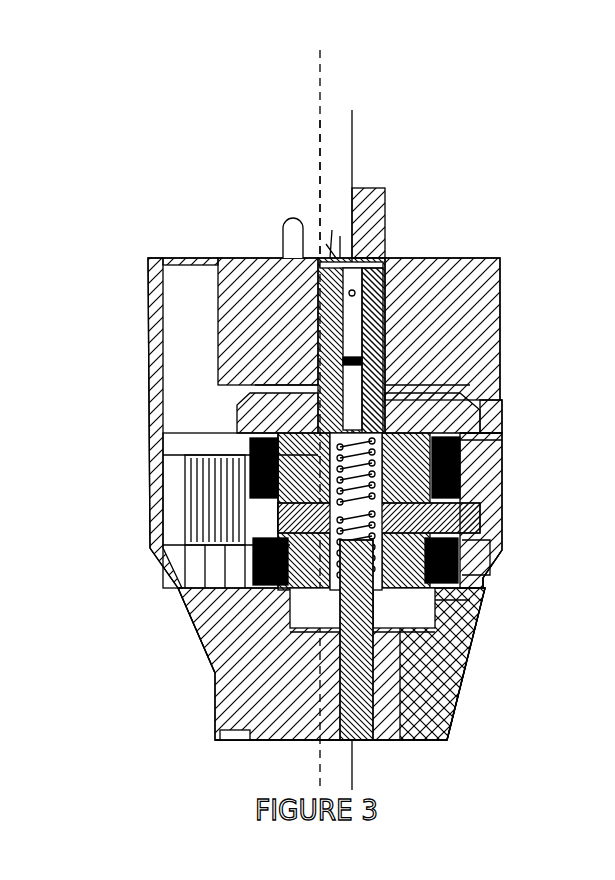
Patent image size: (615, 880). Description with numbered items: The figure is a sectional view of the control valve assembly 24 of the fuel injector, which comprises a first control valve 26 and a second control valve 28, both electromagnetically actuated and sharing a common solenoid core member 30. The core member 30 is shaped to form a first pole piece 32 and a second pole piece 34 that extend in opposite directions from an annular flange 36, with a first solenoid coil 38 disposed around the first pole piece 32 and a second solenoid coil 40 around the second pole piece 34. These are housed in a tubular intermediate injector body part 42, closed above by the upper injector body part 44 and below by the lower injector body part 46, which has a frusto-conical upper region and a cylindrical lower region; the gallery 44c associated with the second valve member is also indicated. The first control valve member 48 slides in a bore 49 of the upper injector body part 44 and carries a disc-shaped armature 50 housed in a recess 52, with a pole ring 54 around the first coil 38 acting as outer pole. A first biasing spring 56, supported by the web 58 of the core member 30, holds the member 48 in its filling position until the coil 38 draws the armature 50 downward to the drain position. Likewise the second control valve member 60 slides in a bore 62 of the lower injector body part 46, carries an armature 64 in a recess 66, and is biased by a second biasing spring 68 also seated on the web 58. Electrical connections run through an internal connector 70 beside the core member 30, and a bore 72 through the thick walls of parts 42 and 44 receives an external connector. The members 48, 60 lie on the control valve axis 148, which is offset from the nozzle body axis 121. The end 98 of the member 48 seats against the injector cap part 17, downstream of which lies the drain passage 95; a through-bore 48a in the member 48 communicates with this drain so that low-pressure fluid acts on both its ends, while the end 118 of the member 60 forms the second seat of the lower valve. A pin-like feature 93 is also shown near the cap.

The injector cap part 17 is at (377, 190).
The control valve assembly 24 is at (90, 272).
The first control valve 26 is at (508, 328).
The second control valve 28 is at (458, 662).
The solenoid core member 30 is at (470, 518).
The first pole piece 32 is at (487, 385).
The second pole piece 34 is at (415, 610).
The flange 36 is at (480, 498).
The first solenoid coil 38 is at (500, 448).
The second solenoid coil 40 is at (490, 566).
The intermediate injector body part 42 is at (498, 548).
The upper injector body part 44 is at (503, 288).
The housing corner 44c is at (442, 745).
The lower injector body part 46 is at (222, 673).
The first control valve member 48 is at (387, 260).
The through-bore 48a is at (348, 322).
The bore 49 is at (432, 262).
The armature 50 is at (443, 418).
The recess 52 is at (455, 400).
The pole ring 54 is at (492, 428).
The first biasing spring 56 is at (475, 472).
The web 58 is at (490, 508).
The second control valve member 60 is at (375, 690).
The bore 62 is at (385, 742).
The armature 64 is at (445, 640).
The recess 66 is at (448, 660).
The second biasing spring 68 is at (240, 603).
The internal connector 70 is at (162, 505).
The bore 72 is at (178, 365).
The pin 93 is at (320, 262).
The drain passage 95 is at (324, 189).
The end 98 is at (336, 235).
The end 118 is at (345, 745).
The axis 121 is at (318, 88).
The control valve axis 148 is at (353, 133).